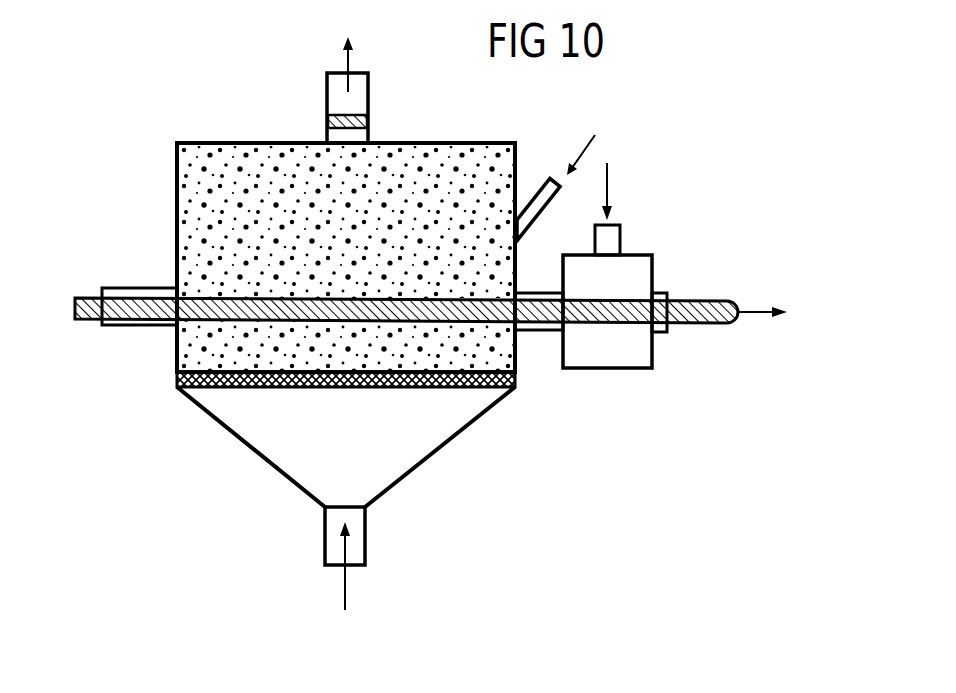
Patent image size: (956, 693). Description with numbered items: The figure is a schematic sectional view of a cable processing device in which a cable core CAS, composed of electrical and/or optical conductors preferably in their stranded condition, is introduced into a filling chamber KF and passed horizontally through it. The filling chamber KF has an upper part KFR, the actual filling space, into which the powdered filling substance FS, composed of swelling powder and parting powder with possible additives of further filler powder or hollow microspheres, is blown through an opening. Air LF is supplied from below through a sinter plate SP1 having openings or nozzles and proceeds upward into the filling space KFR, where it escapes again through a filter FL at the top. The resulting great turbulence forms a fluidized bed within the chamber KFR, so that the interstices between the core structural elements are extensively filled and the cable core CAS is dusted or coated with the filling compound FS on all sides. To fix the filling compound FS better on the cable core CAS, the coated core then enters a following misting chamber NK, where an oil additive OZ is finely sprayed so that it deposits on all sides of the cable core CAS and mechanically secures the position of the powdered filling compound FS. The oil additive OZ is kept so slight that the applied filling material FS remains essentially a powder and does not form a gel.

The upper part of the filling chamber KFR is at (240, 157).
The filter FL is at (352, 114).
The powdered filling substance FS is at (584, 150).
The oil additive OZ is at (608, 180).
The cable core CAS is at (90, 293).
The misting chamber NK is at (607, 355).
The sinter plate SP1 is at (462, 388).
The filling chamber KF is at (226, 450).
The air LF is at (348, 587).